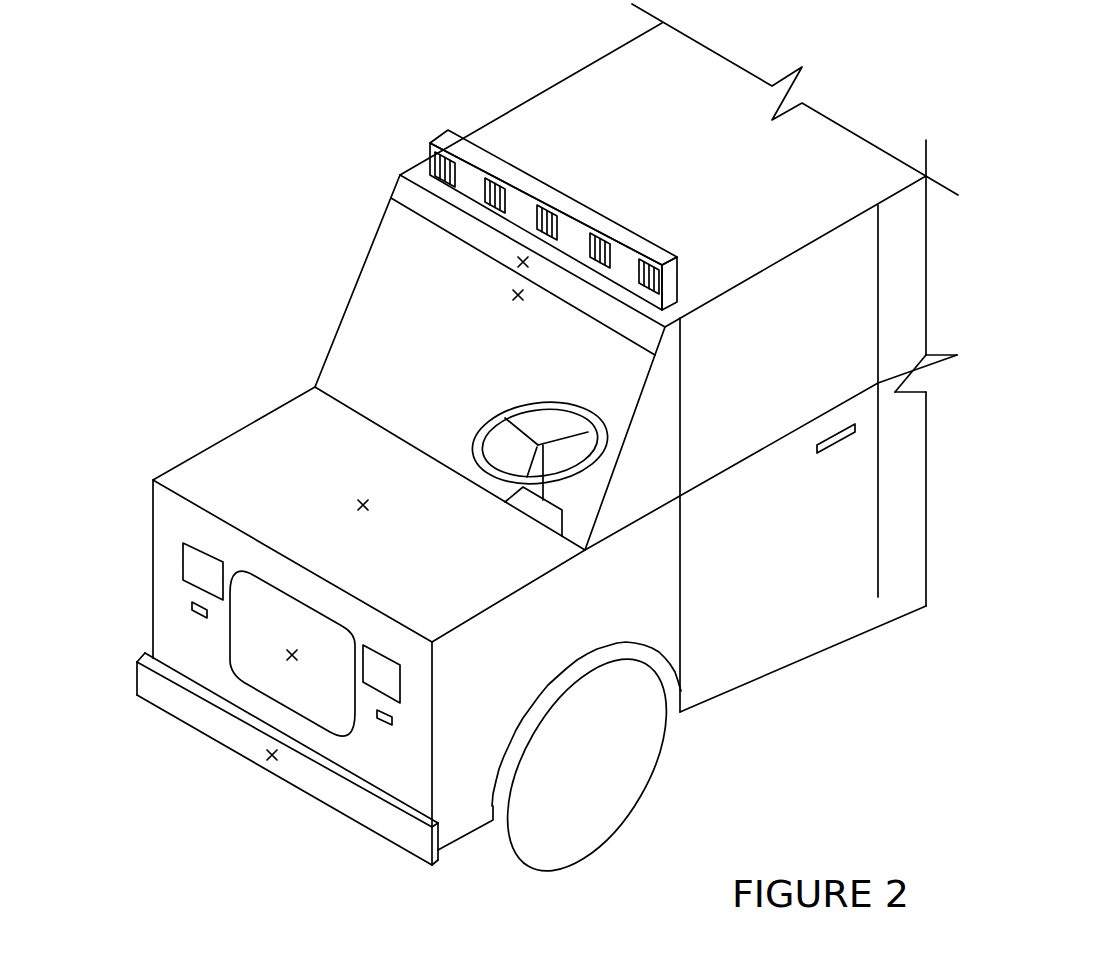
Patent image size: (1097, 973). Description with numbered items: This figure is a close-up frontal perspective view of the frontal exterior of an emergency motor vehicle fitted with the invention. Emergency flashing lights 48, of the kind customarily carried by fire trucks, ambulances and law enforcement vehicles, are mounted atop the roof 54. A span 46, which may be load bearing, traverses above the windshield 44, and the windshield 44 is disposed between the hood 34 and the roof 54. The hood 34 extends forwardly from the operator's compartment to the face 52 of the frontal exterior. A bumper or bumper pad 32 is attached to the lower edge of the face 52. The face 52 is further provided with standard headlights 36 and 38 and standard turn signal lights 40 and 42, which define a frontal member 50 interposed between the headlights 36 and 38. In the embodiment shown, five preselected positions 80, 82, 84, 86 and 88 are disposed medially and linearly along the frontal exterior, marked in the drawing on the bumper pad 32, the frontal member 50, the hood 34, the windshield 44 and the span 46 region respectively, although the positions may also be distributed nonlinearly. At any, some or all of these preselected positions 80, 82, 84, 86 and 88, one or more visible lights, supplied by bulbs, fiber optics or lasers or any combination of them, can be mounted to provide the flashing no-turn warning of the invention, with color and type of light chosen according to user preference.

The bumper pad 32 is at (273, 759).
The hood 34 is at (292, 514).
The headlight 36 is at (145, 554).
The headlight 38 is at (345, 762).
The turn signal light 40 is at (142, 581).
The turn signal light 42 is at (319, 777).
The windshield 44 is at (465, 362).
The span 46 is at (482, 263).
The emergency flashing lights 48 is at (533, 195).
The frontal member 50 is at (229, 672).
The face 52 is at (249, 653).
The roof 54 is at (679, 358).
The preselected position 80 is at (216, 780).
The preselected position 82 is at (278, 630).
The preselected position 84 is at (407, 529).
The preselected position 86 is at (556, 326).
The preselected position 88 is at (463, 246).